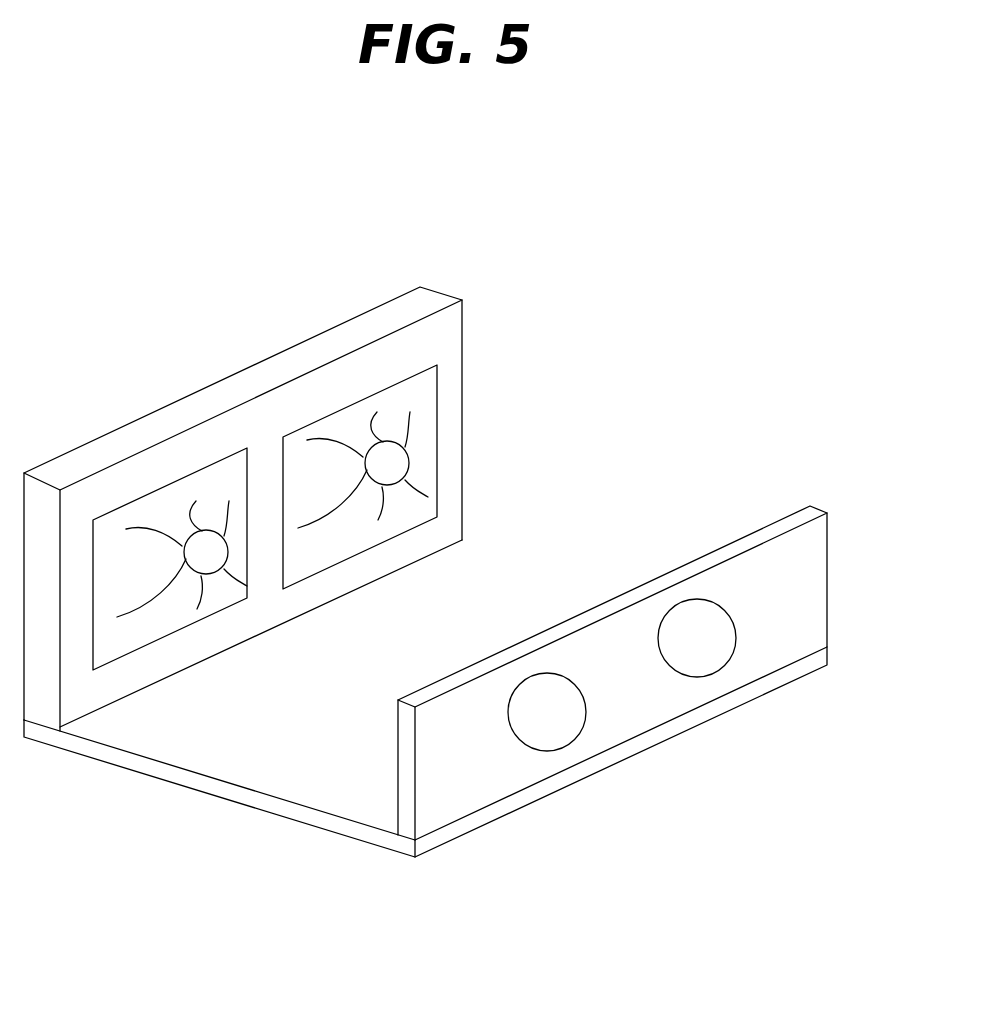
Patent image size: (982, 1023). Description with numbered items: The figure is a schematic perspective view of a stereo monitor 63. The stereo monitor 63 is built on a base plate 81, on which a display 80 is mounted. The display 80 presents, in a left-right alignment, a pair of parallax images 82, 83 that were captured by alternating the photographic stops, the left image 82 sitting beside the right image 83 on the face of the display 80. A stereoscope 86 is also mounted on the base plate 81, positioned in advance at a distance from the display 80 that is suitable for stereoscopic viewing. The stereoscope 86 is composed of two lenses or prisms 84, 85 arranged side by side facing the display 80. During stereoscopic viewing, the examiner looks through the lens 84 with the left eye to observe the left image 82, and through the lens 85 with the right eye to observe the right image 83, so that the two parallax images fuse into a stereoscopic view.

The stereo monitor 63 is at (581, 356).
The display 80 is at (462, 328).
The base plate 81 is at (528, 556).
The left parallax image 82 is at (152, 490).
The right parallax image 83 is at (352, 402).
The lens 84 is at (558, 750).
The lens 85 is at (723, 663).
The stereoscope 86 is at (827, 540).